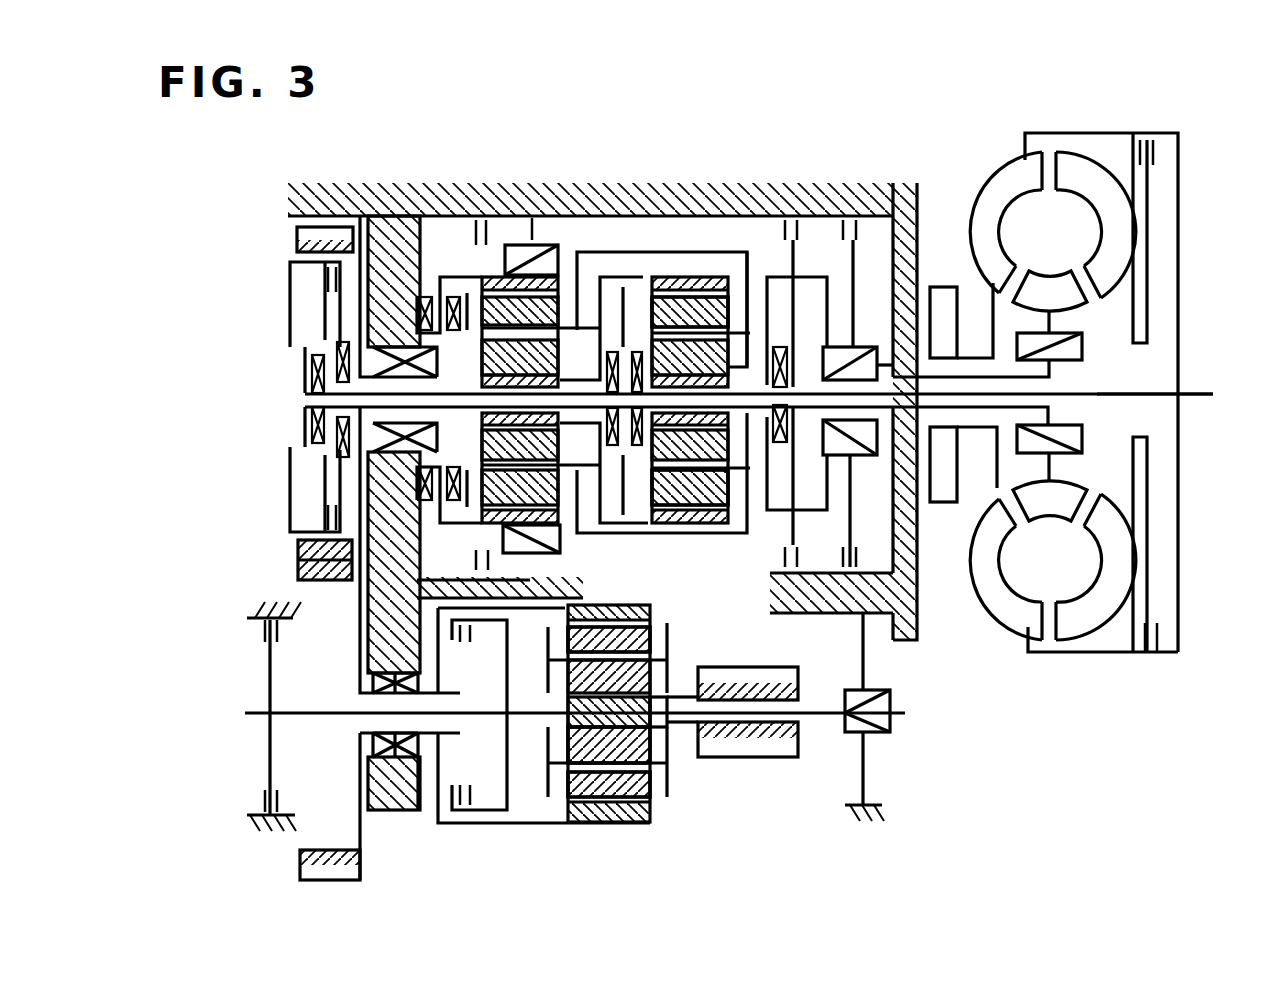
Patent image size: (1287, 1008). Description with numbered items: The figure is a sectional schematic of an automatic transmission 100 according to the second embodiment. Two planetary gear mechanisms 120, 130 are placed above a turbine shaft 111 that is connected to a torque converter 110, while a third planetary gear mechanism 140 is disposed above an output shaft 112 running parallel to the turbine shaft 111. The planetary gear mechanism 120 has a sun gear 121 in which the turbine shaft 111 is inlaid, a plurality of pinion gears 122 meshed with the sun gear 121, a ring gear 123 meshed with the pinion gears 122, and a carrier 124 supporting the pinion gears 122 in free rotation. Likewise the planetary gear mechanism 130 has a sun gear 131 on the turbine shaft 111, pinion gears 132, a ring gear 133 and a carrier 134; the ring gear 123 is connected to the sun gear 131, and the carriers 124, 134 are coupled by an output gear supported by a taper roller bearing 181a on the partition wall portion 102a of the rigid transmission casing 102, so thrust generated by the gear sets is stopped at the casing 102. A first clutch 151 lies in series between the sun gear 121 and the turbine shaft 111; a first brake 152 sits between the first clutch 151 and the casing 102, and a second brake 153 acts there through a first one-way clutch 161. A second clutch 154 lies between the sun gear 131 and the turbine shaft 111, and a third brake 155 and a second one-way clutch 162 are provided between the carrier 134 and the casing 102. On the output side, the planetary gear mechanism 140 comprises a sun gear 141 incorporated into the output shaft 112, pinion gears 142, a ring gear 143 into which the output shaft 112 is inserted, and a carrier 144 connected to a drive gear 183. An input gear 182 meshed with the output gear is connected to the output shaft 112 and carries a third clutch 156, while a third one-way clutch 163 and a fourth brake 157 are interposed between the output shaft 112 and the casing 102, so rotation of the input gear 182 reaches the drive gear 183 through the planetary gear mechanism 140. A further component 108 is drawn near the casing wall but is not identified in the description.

The automatic transmission 100 is at (312, 186).
The transmission casing 102 is at (390, 322).
The partition wall portion 102a is at (380, 300).
The flange 108 is at (297, 240).
The torque converter 110 is at (990, 160).
The turbine shaft 111 is at (1097, 400).
The output shaft 112 is at (822, 716).
The planetary gear mechanism 120 is at (688, 250).
The sun gear 121 is at (652, 285).
The pinion gears 122 is at (713, 275).
The ring gear 123 is at (690, 522).
The carrier 124 is at (755, 275).
The planetary gear mechanism 130 is at (580, 260).
The sun gear 131 is at (470, 283).
The pinion gears 132 is at (500, 290).
The ring gear 133 is at (556, 245).
The carrier 134 is at (568, 236).
The planetary gear mechanism 140 is at (618, 818).
The sun gear 141 is at (672, 683).
The pinion gears 142 is at (637, 787).
The ring gear 143 is at (650, 608).
The carrier 144 is at (670, 740).
The first clutch 151 is at (830, 300).
The first brake 152 is at (812, 260).
The second brake 153 is at (885, 215).
The second clutch 154 is at (327, 280).
The third brake 155 is at (478, 562).
The third clutch 156 is at (457, 628).
The fourth brake 157 is at (263, 628).
The first one-way clutch 161 is at (880, 350).
The second one-way clutch 162 is at (555, 540).
The third one-way clutch 163 is at (892, 712).
The taper roller bearing 181a is at (372, 352).
The input gear 182 is at (300, 873).
The drive gear 183 is at (780, 655).